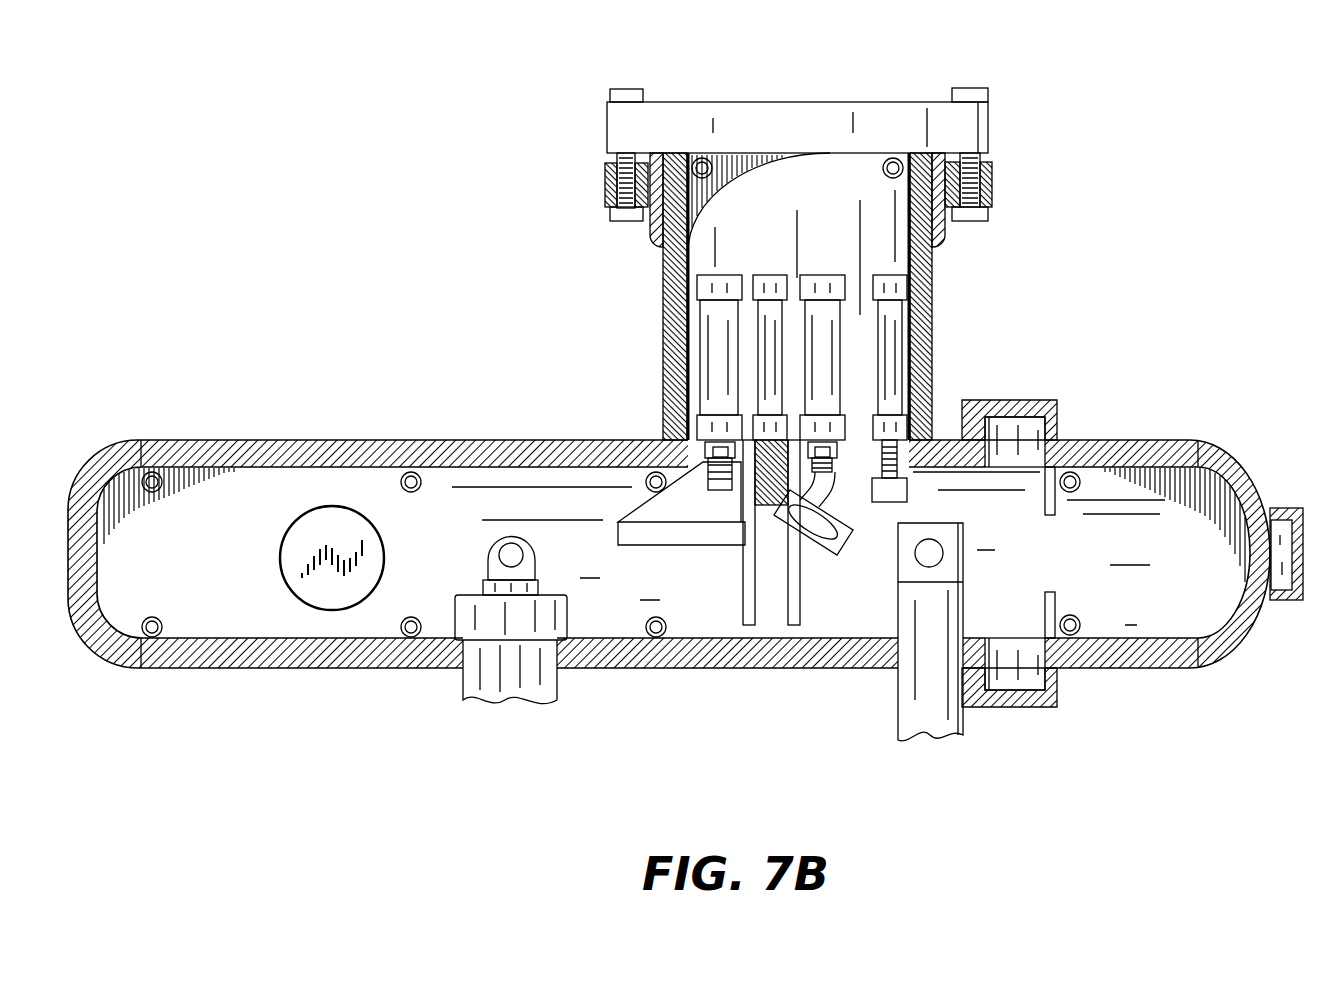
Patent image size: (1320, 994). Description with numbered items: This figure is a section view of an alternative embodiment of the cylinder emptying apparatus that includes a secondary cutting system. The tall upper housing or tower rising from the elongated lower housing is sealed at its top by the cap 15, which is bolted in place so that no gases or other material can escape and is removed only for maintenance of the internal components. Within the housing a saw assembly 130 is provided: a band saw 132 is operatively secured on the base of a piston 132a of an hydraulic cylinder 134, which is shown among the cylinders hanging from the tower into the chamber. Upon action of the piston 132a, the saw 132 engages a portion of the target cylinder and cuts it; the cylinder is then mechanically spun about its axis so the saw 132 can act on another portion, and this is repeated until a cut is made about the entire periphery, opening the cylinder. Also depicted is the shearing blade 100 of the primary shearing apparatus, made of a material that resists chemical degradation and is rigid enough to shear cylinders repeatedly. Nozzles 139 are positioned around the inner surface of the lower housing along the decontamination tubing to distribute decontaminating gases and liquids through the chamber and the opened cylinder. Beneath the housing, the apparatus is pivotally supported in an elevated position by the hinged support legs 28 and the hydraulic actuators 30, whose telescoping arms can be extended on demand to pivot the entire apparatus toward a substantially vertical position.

The cap 15 is at (745, 118).
The saw assembly 130 is at (822, 185).
The hydraulic cylinder 134 is at (820, 308).
The nozzles 139 is at (712, 188).
The band saw 132 is at (833, 556).
The piston 132a is at (838, 442).
The shearing blade 100 is at (918, 490).
The hydraulic actuators 30 is at (440, 683).
The support legs 28 is at (912, 707).